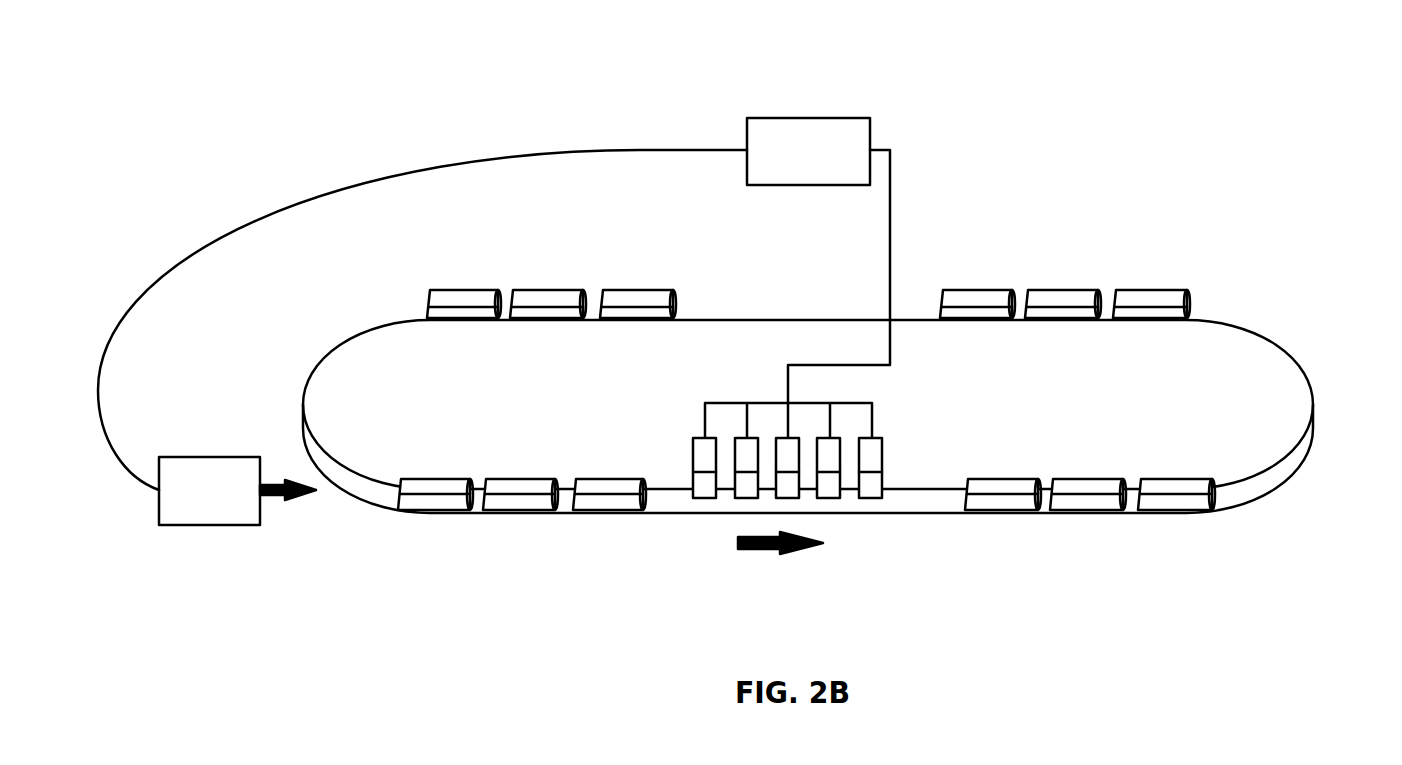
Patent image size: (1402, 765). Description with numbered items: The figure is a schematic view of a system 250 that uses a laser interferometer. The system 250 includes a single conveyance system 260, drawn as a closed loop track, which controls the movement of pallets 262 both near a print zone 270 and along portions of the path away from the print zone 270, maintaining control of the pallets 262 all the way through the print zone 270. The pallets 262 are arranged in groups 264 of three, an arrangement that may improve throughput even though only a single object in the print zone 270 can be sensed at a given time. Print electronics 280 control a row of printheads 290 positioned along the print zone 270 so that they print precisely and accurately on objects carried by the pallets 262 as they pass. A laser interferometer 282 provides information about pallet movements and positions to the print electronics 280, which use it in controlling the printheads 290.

The system 250 is at (1115, 93).
The conveyance system 260 is at (1285, 343).
The pallets 262 is at (642, 468).
The groups 264 is at (802, 397).
The print zone 270 is at (773, 558).
The print electronics 280 is at (494, 304).
The laser interferometer 282 is at (237, 491).
The printheads 290 is at (704, 497).